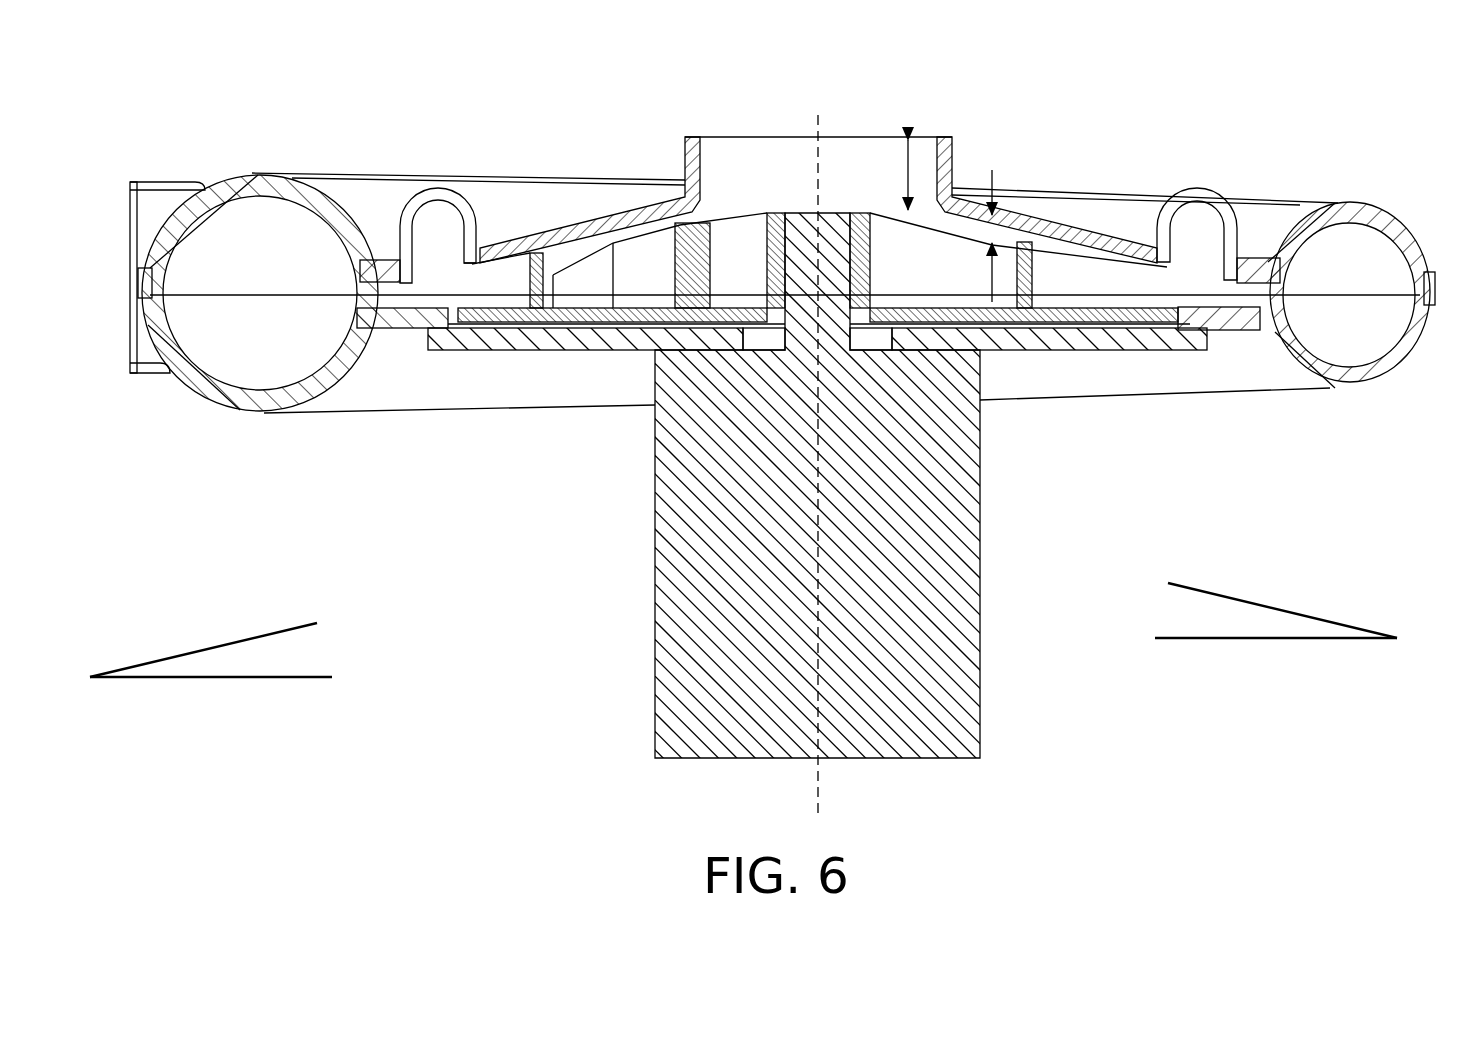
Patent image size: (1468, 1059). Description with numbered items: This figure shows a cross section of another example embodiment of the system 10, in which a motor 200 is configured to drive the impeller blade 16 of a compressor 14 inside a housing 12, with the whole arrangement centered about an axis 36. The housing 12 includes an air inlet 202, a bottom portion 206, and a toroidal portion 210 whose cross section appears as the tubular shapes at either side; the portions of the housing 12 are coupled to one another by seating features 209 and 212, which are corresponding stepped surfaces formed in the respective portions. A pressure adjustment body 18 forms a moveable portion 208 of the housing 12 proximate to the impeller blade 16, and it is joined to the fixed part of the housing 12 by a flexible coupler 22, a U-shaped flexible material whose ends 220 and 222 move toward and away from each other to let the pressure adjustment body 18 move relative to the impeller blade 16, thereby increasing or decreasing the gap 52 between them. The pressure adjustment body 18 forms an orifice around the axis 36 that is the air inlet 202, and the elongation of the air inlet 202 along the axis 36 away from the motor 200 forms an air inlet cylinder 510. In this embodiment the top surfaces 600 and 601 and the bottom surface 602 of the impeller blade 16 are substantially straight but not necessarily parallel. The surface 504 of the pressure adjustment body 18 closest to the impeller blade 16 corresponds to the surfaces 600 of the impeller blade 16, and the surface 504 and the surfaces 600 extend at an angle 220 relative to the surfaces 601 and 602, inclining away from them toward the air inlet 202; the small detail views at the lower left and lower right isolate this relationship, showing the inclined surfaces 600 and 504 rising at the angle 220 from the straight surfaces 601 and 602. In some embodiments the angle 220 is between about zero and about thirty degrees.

The system 10 is at (185, 125).
The housing 12 is at (1370, 200).
The compressor 14 is at (370, 175).
The impeller blade 16 is at (1140, 318).
The pressure adjustment body 18 is at (743, 371).
The flexible coupler 22 is at (1200, 185).
The axis 36 is at (813, 768).
The gap 52 is at (991, 223).
The motor 200 is at (655, 672).
The air inlet 202 is at (922, 107).
The bottom portion 206 is at (782, 333).
The moveable portion 208 is at (743, 371).
The seating feature 209 is at (158, 260).
The toroidal portion 210 is at (227, 325).
The seating feature 212 is at (147, 308).
The angle 220 is at (405, 283).
The end 222 is at (472, 265).
The surface 504 is at (567, 253).
The air inlet cylinder 510 is at (906, 175).
The top surface 600 is at (687, 158).
The top surface 601 is at (495, 305).
The bottom surface 602 is at (592, 325).